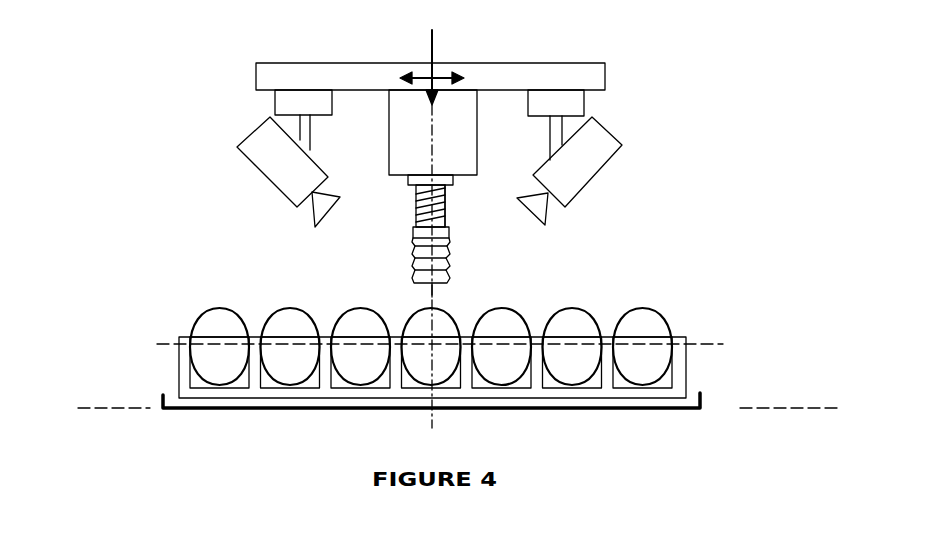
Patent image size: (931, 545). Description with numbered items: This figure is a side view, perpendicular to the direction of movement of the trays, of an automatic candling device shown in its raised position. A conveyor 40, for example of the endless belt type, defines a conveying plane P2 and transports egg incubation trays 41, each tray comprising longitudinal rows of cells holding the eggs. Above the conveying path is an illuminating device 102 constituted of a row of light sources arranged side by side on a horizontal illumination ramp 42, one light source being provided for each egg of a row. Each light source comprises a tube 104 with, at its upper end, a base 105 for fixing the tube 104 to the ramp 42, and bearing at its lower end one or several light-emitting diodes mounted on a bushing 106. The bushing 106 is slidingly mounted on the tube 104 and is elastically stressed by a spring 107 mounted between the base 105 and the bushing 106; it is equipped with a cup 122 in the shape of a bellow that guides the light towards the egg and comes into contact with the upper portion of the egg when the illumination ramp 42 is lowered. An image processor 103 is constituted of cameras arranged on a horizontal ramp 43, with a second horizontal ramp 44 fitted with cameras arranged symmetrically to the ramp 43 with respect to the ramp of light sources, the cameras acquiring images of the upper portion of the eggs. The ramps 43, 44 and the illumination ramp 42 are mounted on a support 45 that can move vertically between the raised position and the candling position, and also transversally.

The support 45 is at (522, 70).
The second horizontal ramp 44 is at (292, 100).
The horizontal ramp 43 is at (572, 105).
The illumination ramp 42 is at (412, 103).
The image processor 103 is at (240, 170).
The base 105 is at (420, 180).
The spring 107 is at (420, 207).
The tube 104 is at (445, 210).
The bushing 106 is at (414, 232).
The cup 122 is at (413, 262).
The illuminating device 102 is at (468, 243).
The egg incubation tray 41 is at (178, 373).
The conveyor 40 is at (673, 408).
The conveying plane P2 is at (122, 408).